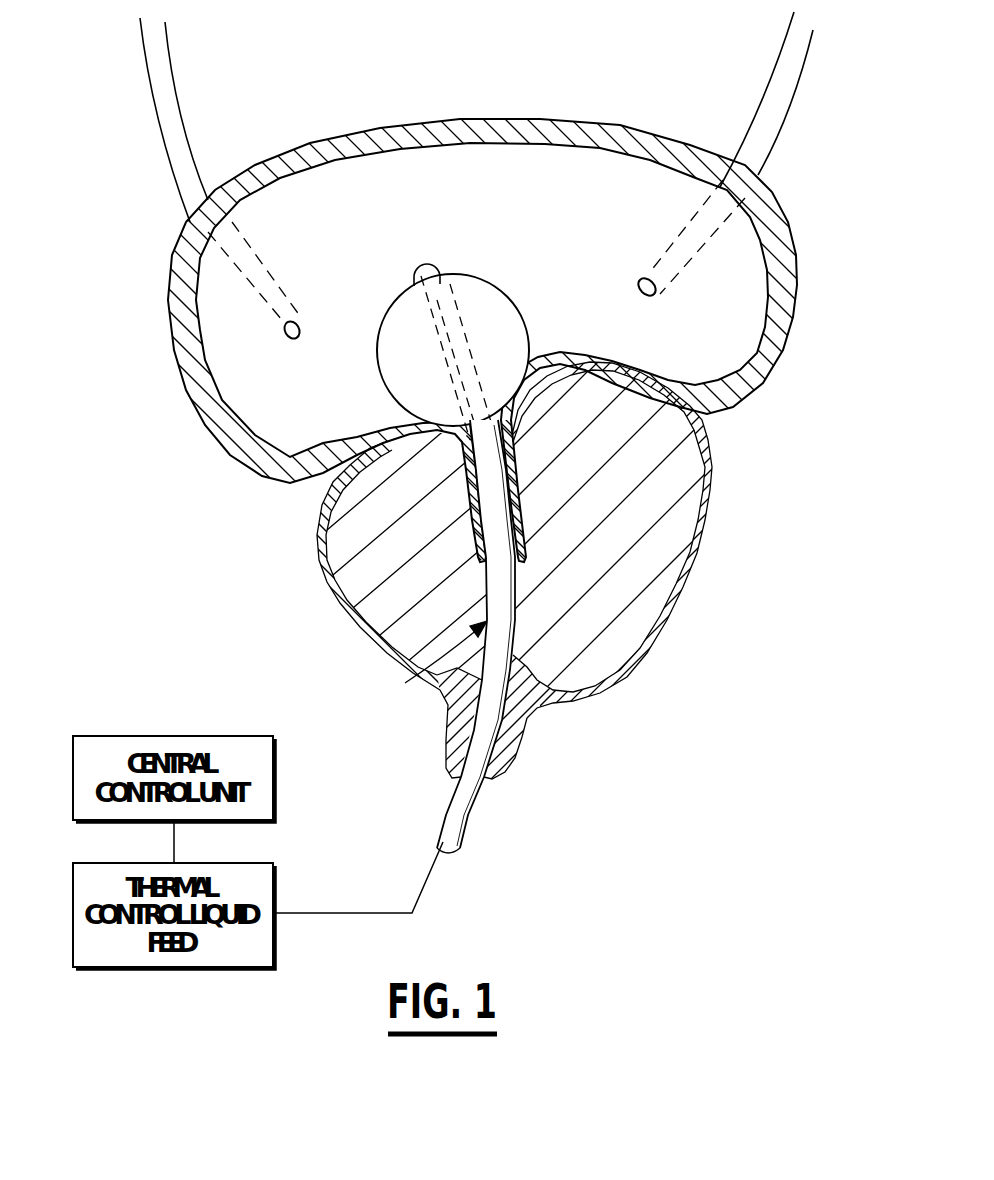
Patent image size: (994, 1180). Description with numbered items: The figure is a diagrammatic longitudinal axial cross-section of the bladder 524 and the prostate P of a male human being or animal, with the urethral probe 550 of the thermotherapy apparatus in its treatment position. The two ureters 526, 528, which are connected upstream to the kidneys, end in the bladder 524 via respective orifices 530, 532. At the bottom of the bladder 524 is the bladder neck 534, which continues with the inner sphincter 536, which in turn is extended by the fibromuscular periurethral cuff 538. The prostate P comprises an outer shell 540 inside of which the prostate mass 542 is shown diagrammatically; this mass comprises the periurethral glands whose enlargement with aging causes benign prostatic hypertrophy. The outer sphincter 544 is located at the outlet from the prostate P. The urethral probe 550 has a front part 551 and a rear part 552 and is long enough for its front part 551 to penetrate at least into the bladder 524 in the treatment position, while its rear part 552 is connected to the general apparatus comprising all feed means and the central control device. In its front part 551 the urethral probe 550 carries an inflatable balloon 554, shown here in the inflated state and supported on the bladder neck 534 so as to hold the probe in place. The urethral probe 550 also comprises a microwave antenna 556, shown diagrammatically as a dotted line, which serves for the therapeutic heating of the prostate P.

The bladder 524 is at (522, 122).
The ureter 526 is at (793, 56).
The ureter 528 is at (167, 70).
The orifice 530 is at (640, 293).
The orifice 532 is at (296, 342).
The bladder neck 534 is at (541, 360).
The inner sphincter 536 is at (512, 432).
The fibromuscular periurethral cuff 538 is at (524, 512).
The outer shell 540 is at (686, 582).
The prostate mass 542 is at (360, 583).
The outer sphincter 544 is at (510, 742).
The urethral probe 550 is at (405, 683).
The front part 551 is at (428, 264).
The rear part 552 is at (447, 826).
The inflatable balloon 554 is at (494, 283).
The microwave antenna 556 is at (457, 441).
The prostate P is at (494, 476).